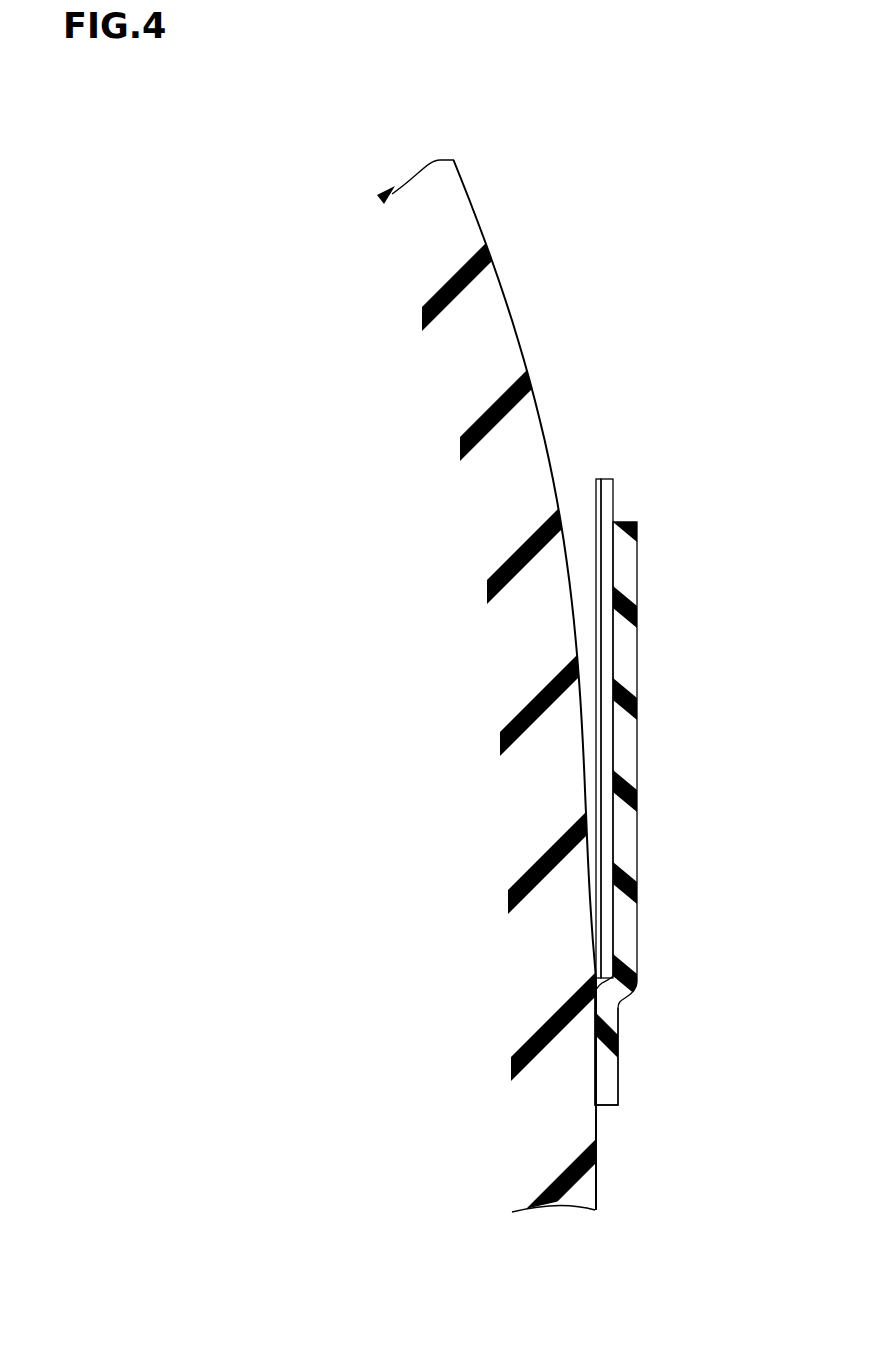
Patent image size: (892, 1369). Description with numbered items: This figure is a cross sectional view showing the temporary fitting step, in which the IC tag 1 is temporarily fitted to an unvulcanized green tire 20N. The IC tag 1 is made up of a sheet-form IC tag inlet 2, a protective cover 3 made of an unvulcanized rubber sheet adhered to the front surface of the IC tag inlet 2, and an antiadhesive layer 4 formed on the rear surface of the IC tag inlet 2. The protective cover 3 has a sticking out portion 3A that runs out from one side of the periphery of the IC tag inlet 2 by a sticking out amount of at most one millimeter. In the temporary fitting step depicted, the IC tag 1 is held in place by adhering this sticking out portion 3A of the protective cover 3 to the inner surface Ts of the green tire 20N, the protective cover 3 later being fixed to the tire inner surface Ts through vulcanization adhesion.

The IC tag 1 is at (676, 716).
The IC tag inlet 2 is at (608, 500).
The protective cover 3 is at (637, 757).
The sticking out portion 3A is at (653, 985).
The antiadhesive layer 4 is at (588, 522).
The tire inner surface Ts is at (596, 1127).
The unvulcanized green tire 20N is at (533, 1153).